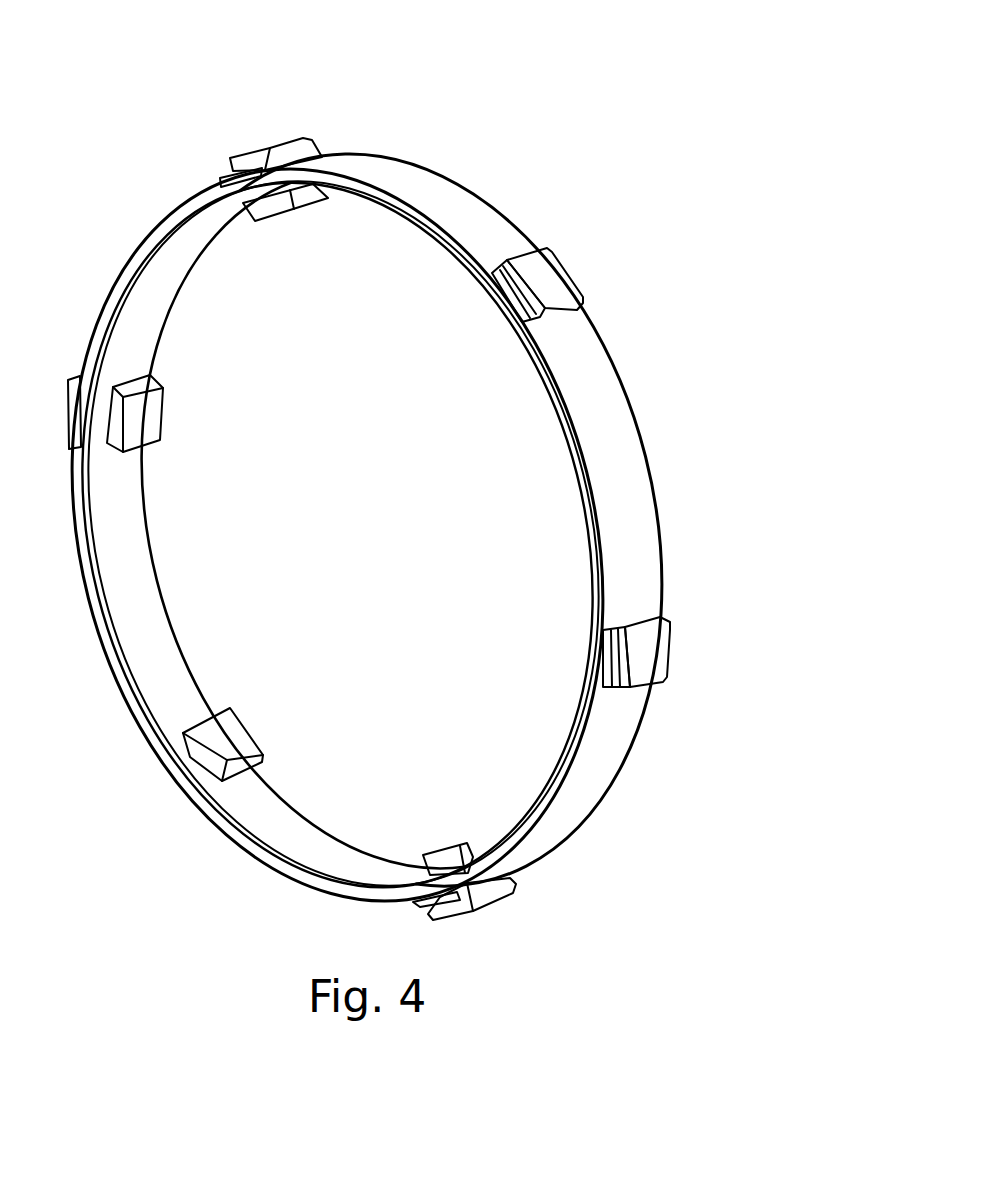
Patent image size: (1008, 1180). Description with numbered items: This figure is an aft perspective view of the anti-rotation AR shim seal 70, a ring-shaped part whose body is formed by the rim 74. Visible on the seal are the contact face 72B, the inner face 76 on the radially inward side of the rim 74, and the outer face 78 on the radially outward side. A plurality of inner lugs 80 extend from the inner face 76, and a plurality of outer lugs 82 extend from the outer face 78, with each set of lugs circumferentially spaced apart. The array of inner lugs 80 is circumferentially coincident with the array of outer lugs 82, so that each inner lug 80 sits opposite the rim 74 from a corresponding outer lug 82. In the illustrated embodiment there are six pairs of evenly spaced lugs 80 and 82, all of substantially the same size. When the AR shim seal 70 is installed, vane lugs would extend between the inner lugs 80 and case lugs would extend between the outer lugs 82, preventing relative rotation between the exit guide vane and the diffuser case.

The AR shim seal 70 is at (622, 78).
The rim 74 is at (627, 358).
The contact face 72B is at (448, 248).
The outer face 78 is at (622, 497).
The inner face 76 is at (137, 623).
The outer lug 82 is at (292, 138).
The inner lug 80 is at (277, 218).